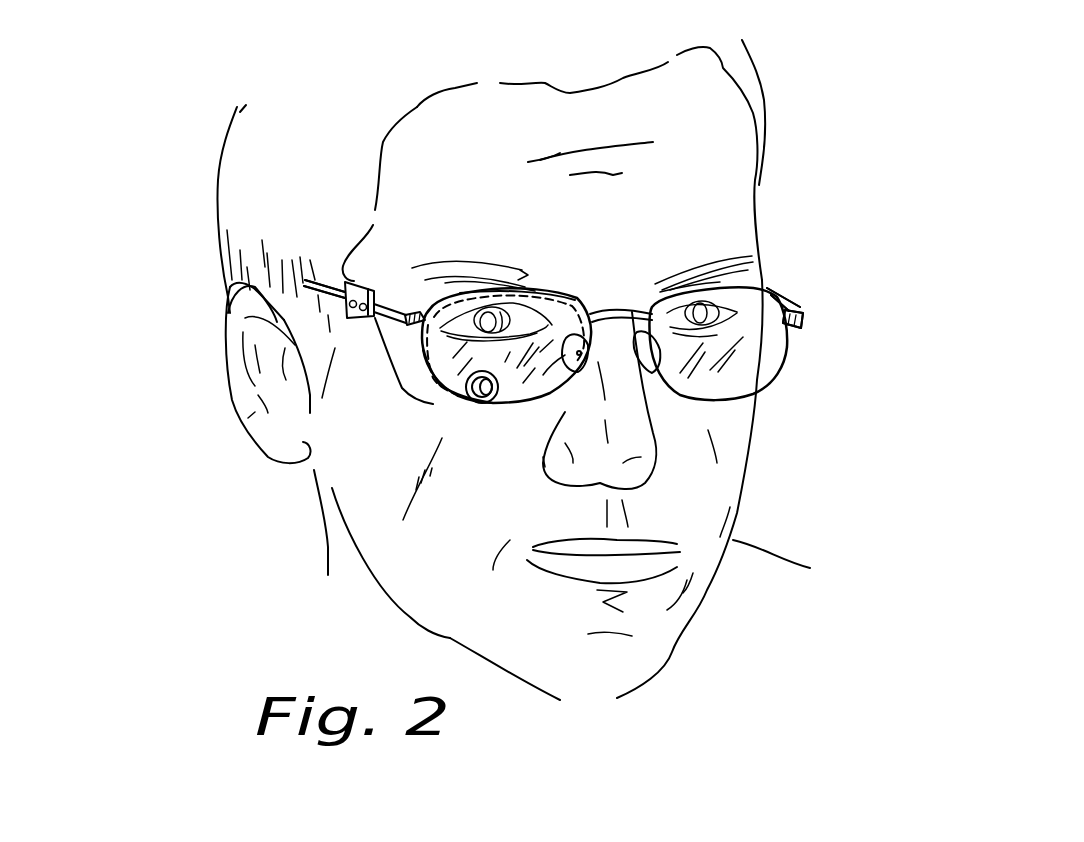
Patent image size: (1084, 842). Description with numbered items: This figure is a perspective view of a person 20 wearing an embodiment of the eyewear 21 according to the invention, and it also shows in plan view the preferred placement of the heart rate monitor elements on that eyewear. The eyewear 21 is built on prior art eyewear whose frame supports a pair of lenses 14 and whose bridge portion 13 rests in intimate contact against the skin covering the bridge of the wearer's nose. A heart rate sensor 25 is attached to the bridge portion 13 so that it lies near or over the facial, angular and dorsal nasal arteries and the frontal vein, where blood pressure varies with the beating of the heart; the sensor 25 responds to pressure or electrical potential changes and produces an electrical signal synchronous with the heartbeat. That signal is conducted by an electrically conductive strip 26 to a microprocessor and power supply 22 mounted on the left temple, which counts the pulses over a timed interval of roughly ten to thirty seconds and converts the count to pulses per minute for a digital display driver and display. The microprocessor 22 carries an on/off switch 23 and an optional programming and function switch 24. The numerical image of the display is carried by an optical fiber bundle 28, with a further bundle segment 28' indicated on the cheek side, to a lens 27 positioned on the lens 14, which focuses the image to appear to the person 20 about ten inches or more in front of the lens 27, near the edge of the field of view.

The person 20 is at (468, 50).
The microprocessor and power supply 22 is at (347, 283).
The on/off switch 23 is at (350, 304).
The programming and function switch 24 is at (362, 312).
The lenses 14 is at (440, 343).
The electrically conductive strip 26 is at (457, 298).
The heart rate sensor 25 is at (573, 296).
The bridge portion 13 is at (630, 310).
The eyewear 21 is at (787, 283).
The lens 27 is at (487, 403).
The optical fiber bundle 28 is at (394, 414).
The lower lens rim 28' is at (353, 488).